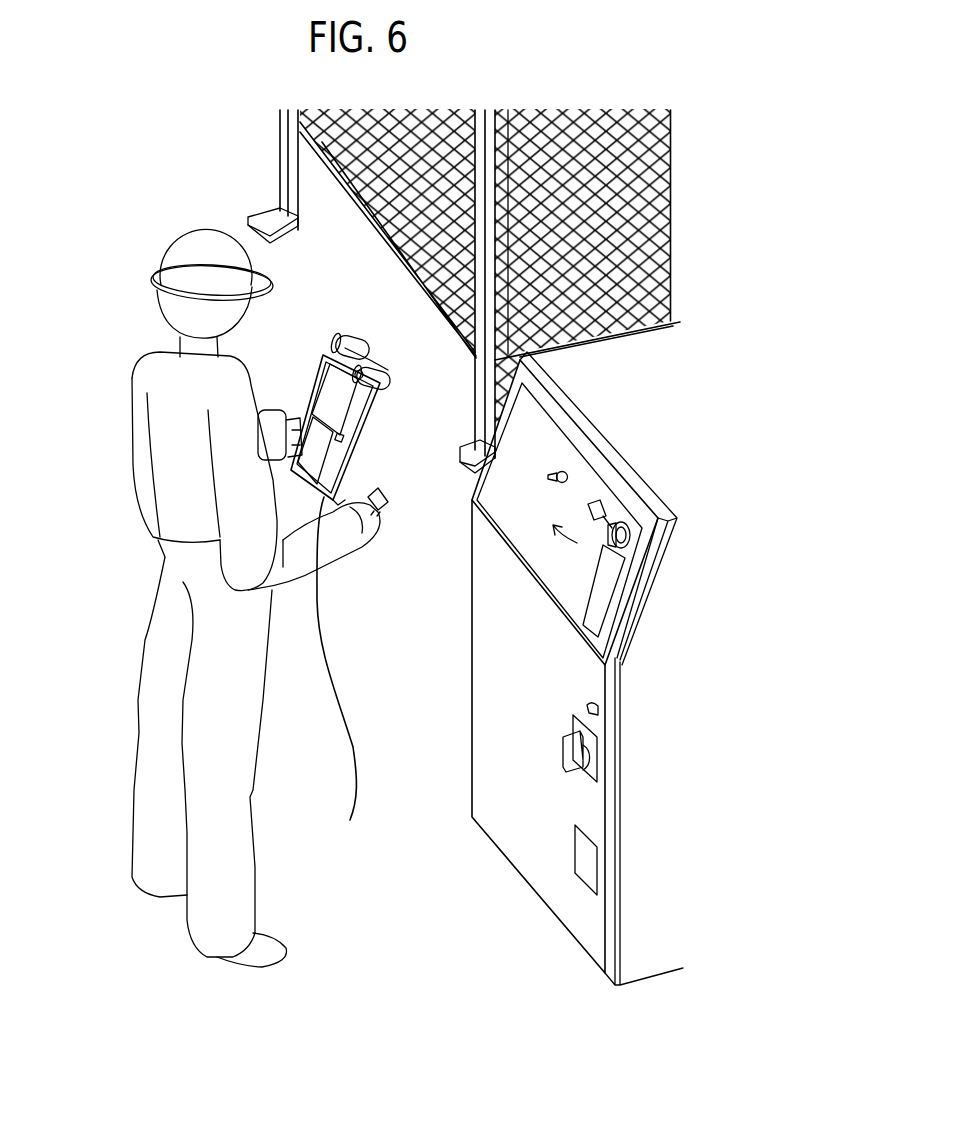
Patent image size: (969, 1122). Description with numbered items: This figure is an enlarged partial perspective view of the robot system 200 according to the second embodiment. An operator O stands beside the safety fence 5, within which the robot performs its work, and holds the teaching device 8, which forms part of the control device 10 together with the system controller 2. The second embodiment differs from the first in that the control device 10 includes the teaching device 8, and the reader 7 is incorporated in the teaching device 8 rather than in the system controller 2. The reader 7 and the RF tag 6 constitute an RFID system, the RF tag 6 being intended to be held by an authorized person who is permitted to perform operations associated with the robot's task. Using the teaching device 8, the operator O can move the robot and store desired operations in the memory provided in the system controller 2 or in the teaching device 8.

The robot system 200 is at (87, 146).
The operator O is at (177, 313).
The safety fence 5 is at (283, 157).
The reader 7 is at (363, 440).
The RF tag 6 is at (385, 507).
The teaching device 8 is at (337, 675).
The system controller 2 is at (483, 705).
The control device 10 is at (413, 847).